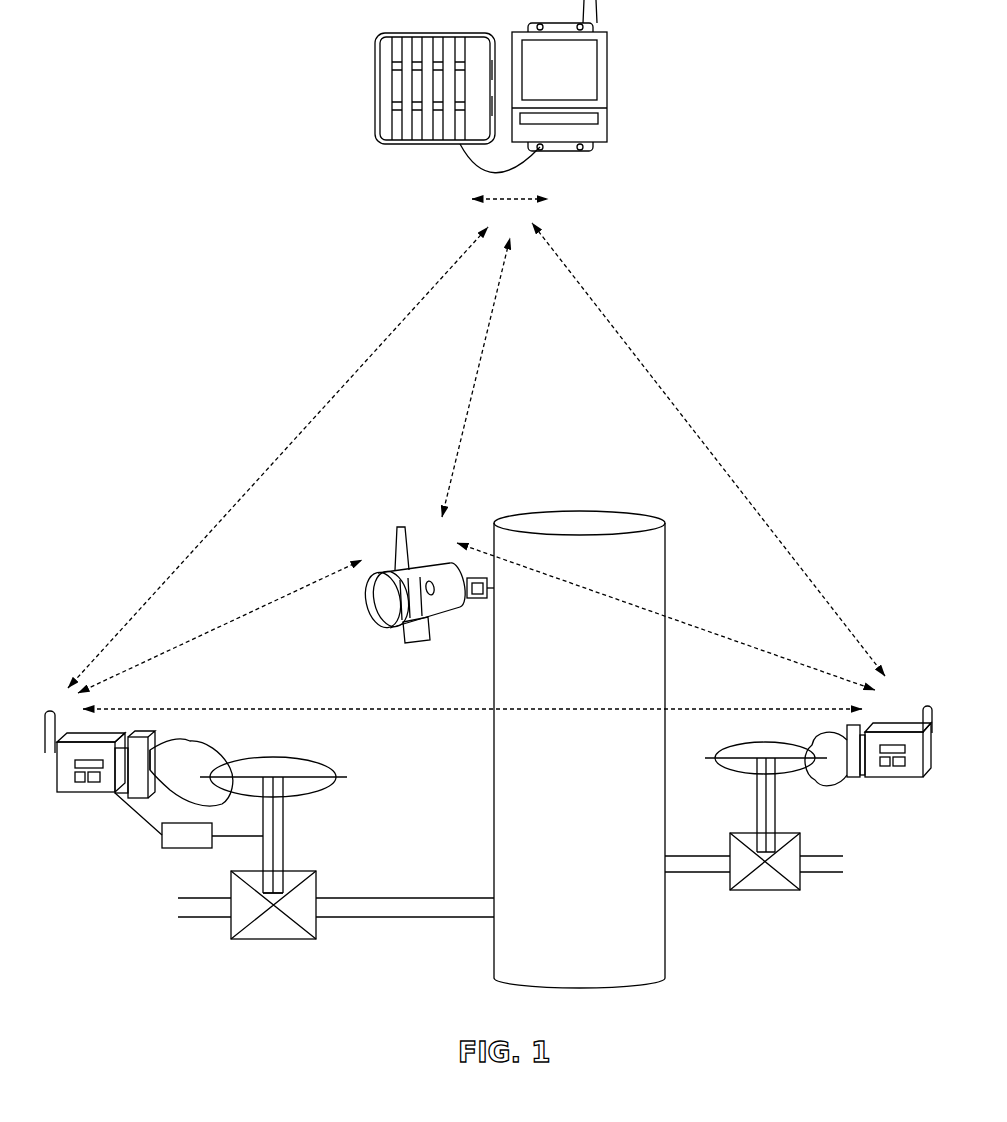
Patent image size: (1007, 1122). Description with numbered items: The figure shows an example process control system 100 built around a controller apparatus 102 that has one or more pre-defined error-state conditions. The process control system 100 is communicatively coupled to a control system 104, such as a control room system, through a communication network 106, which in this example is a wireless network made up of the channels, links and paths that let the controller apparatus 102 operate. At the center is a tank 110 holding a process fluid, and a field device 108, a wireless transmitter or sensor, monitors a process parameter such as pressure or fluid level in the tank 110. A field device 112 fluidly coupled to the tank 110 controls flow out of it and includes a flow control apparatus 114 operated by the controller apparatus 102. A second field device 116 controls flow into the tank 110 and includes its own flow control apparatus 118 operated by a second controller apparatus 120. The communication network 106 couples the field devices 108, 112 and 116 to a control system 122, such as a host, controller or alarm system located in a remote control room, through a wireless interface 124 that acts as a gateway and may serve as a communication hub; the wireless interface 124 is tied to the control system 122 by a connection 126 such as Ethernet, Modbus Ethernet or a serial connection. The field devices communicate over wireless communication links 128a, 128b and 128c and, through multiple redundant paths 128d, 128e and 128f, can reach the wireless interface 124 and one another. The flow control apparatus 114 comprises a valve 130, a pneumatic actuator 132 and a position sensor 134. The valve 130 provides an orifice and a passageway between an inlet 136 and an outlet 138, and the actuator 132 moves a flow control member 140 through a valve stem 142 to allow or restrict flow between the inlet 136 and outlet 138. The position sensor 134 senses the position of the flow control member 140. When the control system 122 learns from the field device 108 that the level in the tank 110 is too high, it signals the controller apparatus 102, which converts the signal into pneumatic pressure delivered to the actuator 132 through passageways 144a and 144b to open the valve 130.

The process control system 100 is at (228, 330).
The controller apparatus 102 is at (70, 810).
The control system 104 is at (352, 67).
The communication network 106 is at (283, 418).
The field device 108 is at (418, 572).
The tank 110 is at (583, 523).
The field device 112 is at (153, 895).
The flow control apparatus 114 is at (284, 820).
The second field device 116 is at (785, 818).
The flow control apparatus 118 is at (765, 882).
The second controller apparatus 120 is at (893, 786).
The control system 122 is at (375, 98).
The wireless interface 124 is at (610, 70).
The connection 126 is at (537, 167).
The wireless communication link 128a is at (405, 318).
The wireless communication link 128b is at (477, 372).
The wireless communication link 128c is at (680, 406).
The redundant communication path 128d is at (298, 588).
The redundant communication path 128e is at (714, 630).
The redundant communication path 128f is at (350, 707).
The valve 130 is at (275, 940).
The pneumatic actuator 132 is at (318, 762).
The position sensor 134 is at (187, 850).
The inlet 136 is at (318, 903).
The outlet 138 is at (230, 905).
The flow control member 140 is at (283, 893).
The valve stem 142 is at (274, 848).
The passageway 144a is at (197, 745).
The passageway 144b is at (158, 772).